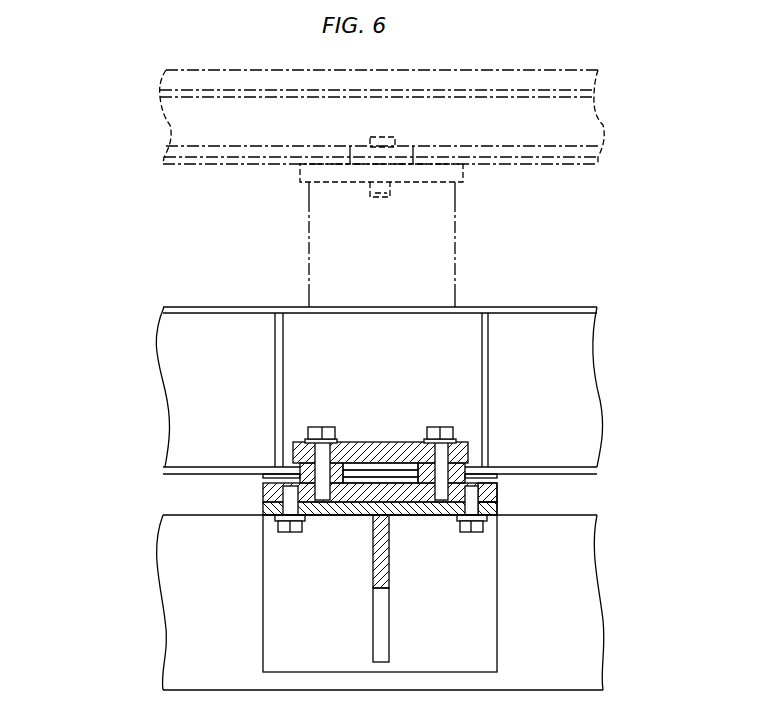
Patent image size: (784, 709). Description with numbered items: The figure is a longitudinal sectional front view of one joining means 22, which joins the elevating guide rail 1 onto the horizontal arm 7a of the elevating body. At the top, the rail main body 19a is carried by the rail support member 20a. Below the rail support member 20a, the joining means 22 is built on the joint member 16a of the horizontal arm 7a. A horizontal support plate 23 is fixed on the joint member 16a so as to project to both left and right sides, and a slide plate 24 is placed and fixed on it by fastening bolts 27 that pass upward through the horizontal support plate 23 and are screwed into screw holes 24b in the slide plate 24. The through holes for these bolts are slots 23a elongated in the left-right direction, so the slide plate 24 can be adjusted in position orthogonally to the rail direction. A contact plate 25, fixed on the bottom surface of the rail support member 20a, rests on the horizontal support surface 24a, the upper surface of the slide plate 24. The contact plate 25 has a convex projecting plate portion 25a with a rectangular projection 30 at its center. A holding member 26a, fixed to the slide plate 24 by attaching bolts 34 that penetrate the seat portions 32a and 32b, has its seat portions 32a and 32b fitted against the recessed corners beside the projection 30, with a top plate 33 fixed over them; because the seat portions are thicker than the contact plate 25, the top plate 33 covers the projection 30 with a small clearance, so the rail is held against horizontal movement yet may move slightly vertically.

The elevating guide rail 1 is at (363, 188).
The rail main body 19a is at (190, 120).
The rail support member 20a is at (557, 307).
The joining means 22 is at (339, 470).
The horizontal support surface 24a is at (352, 450).
The slide plate 24 is at (352, 505).
The screw hole 24b is at (497, 496).
The horizontal support plate 23 is at (420, 508).
The slot 23a is at (487, 508).
The convex projecting plate portion 25a is at (365, 470).
The contact plate 25 is at (408, 477).
The top plate 33 is at (392, 478).
The holding member 26a is at (290, 453).
The seat portion 32a is at (488, 466).
The seat portion 32b is at (262, 469).
The attaching bolt 34 is at (306, 433).
The fastening bolt 27 is at (292, 535).
The projection 30 is at (400, 520).
The joint member 16a is at (190, 623).
The horizontal arm 7a is at (371, 602).